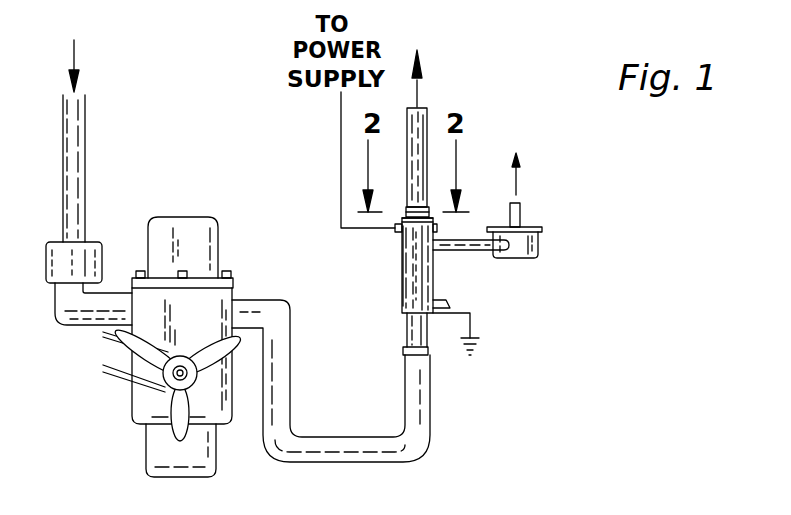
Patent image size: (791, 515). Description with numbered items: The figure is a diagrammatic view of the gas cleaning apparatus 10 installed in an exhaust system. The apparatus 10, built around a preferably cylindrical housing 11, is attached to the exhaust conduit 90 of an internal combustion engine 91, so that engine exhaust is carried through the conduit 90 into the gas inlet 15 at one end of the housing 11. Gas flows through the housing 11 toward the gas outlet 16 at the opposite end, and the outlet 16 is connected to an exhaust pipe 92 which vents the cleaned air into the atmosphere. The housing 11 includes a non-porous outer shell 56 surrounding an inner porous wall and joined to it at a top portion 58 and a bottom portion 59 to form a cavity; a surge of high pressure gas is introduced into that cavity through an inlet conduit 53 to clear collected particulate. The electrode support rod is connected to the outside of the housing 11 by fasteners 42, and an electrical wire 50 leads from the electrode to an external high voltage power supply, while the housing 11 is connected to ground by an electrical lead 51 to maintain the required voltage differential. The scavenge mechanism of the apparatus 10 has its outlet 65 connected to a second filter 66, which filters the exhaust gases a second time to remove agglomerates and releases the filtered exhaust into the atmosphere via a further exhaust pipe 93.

The gas cleaning apparatus 10 is at (388, 274).
The housing 11 is at (402, 301).
The gas inlet 15 is at (413, 323).
The gas outlet 16 is at (410, 214).
The fasteners 42 is at (396, 231).
The electrical wire 50 is at (340, 208).
The electrical lead 51 is at (474, 329).
The inlet conduit 53 is at (448, 298).
The non-porous outer shell 56 is at (398, 283).
The top portion 58 is at (430, 214).
The bottom portion 59 is at (427, 318).
The outlet 65 is at (443, 252).
The second filter 66 is at (530, 259).
The exhaust conduit 90 is at (245, 302).
The internal combustion engine 91 is at (130, 398).
The exhaust pipe 92 is at (423, 120).
The exhaust pipe 93 is at (522, 216).